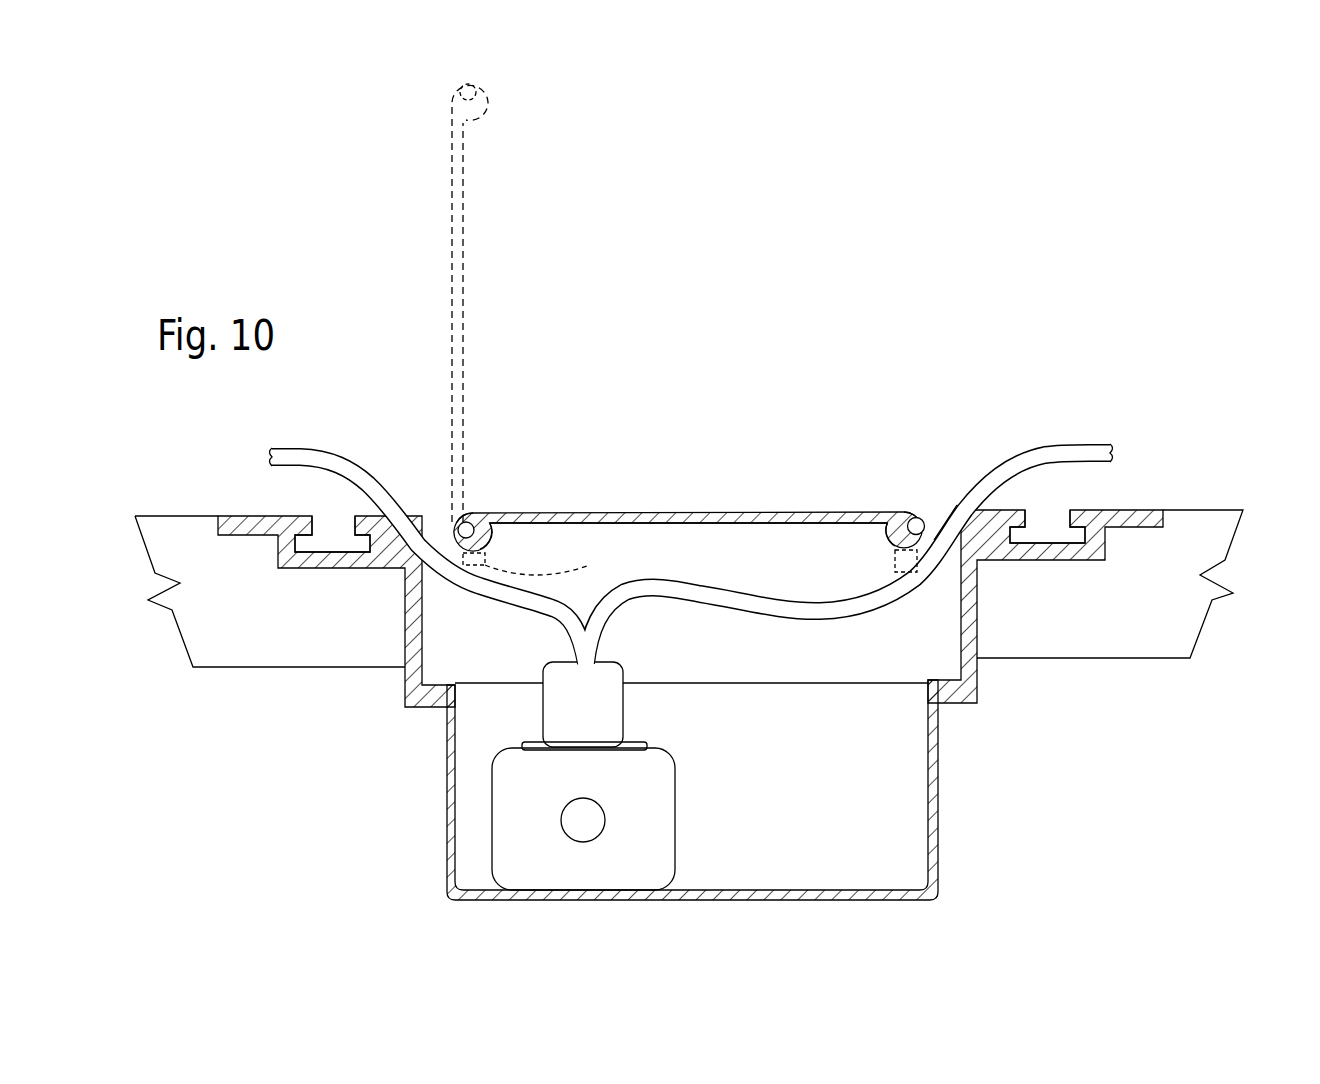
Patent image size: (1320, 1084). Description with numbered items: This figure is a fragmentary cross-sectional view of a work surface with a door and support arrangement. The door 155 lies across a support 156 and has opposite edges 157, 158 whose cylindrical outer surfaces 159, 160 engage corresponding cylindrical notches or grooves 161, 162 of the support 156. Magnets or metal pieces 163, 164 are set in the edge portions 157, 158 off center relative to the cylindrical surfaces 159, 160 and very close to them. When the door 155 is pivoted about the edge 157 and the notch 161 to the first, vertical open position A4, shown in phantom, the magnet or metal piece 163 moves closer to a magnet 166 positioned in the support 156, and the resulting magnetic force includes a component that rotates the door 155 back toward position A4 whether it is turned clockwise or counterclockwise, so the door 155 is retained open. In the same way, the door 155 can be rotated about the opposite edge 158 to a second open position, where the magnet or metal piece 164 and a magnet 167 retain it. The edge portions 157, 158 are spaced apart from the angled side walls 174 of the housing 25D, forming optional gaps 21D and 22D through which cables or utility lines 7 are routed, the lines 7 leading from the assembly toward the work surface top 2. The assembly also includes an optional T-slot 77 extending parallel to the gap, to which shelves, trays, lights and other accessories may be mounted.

The work surface top 2 is at (1205, 508).
The cables 7 is at (691, 515).
The gap 21D is at (952, 525).
The gap 22D is at (447, 523).
The housing 25D is at (405, 703).
The T-slot 77 is at (330, 523).
The door 155 is at (605, 512).
The support 156 is at (713, 543).
The edge 157 is at (477, 512).
The edge 158 is at (914, 514).
The cylindrical outer surface 159 is at (464, 517).
The cylindrical outer surface 160 is at (923, 513).
The notch 161 is at (490, 543).
The groove 162 is at (887, 528).
The magnet or metal piece 163 is at (483, 520).
The magnet or metal piece 164 is at (940, 528).
The magnet 166 is at (561, 558).
The magnet 167 is at (895, 572).
The angled side walls 174 is at (397, 490).
The first open position A4 is at (463, 200).